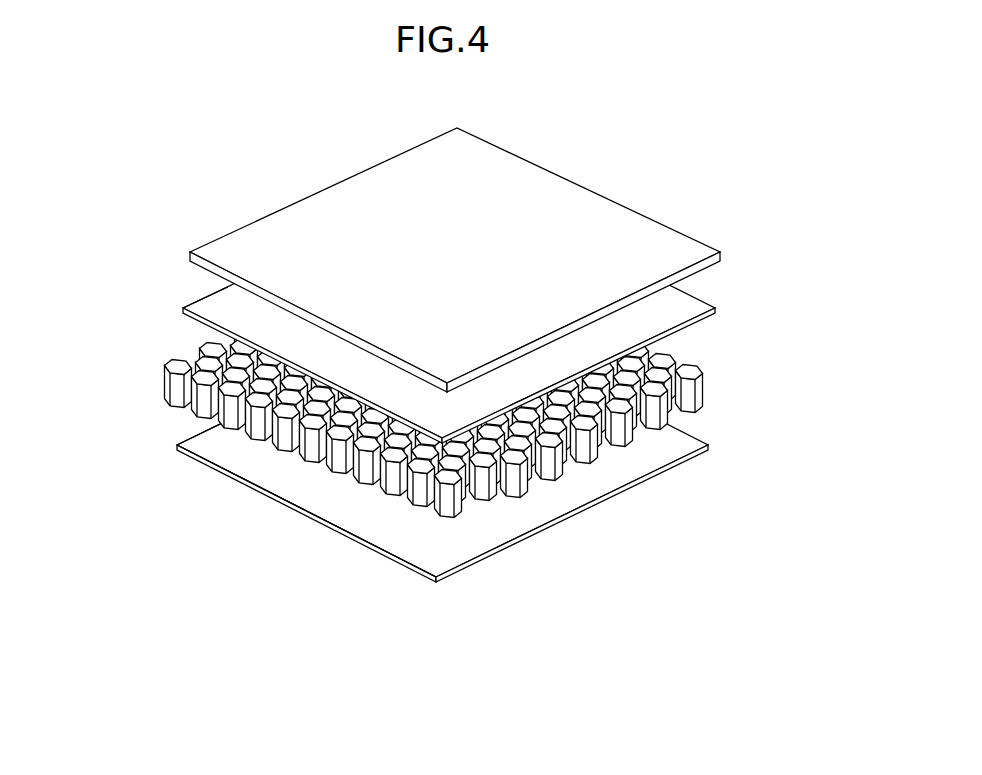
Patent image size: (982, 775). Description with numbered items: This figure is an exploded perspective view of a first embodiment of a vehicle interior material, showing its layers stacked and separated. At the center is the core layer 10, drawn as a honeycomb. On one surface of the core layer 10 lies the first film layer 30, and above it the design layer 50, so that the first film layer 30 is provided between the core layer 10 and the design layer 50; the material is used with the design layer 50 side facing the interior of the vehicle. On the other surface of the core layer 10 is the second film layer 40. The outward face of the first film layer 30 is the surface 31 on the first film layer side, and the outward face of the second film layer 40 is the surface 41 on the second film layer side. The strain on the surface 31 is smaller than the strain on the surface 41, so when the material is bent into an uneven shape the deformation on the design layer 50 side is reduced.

The core layer 10 is at (705, 392).
The first film layer 30 is at (717, 312).
The surface on the first film layer side 31 is at (212, 307).
The second film layer 40 is at (710, 446).
The surface on the second film layer side 41 is at (200, 458).
The design layer 50 is at (722, 257).